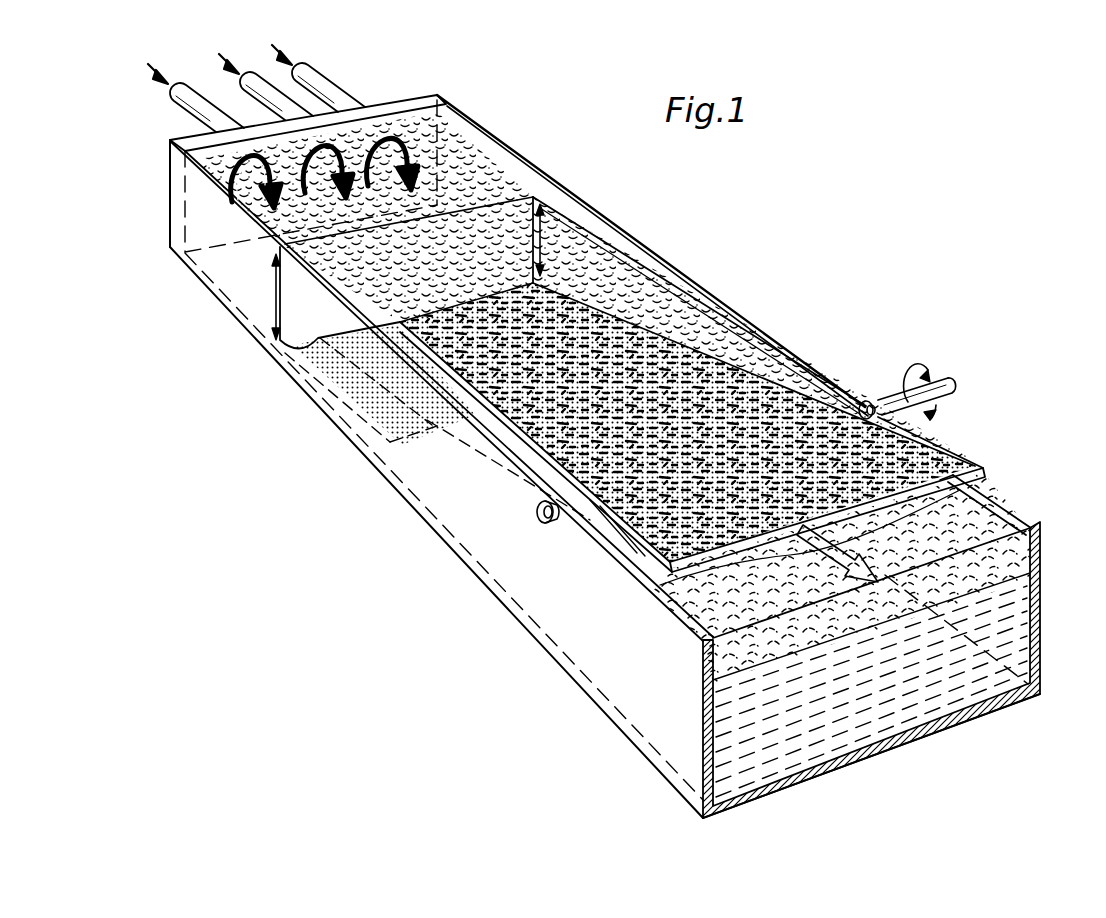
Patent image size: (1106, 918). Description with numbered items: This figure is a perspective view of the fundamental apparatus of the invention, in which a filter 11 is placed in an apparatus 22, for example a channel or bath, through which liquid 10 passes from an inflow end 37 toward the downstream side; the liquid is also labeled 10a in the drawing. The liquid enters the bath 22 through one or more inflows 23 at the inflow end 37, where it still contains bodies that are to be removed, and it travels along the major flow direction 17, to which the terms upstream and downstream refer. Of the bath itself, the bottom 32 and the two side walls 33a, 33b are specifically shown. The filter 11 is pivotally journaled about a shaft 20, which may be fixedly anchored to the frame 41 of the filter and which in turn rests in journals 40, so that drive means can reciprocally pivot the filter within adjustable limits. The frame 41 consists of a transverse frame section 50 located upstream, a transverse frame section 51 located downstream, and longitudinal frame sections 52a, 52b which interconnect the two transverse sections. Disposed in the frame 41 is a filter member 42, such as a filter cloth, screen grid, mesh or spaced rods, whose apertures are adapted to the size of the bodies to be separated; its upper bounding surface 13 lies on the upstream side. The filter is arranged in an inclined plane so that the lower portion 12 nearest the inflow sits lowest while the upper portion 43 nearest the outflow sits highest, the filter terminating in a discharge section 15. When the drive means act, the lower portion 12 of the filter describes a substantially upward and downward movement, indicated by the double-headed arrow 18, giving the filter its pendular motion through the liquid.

The liquid 10 is at (457, 158).
The tank 10a is at (1030, 526).
The filter 11 is at (440, 437).
The lower portion of the filter 12 is at (353, 395).
The upper bounding surface 13 is at (407, 390).
The discharge section 15 is at (953, 455).
The flow direction 17 is at (235, 197).
The double-headed arrow 18 is at (547, 227).
The shaft 20 is at (945, 392).
The bath 22 is at (708, 280).
The inflows 23 is at (325, 100).
The bottom 32 is at (893, 745).
The side wall 33a is at (997, 523).
The side wall 33b is at (562, 622).
The inflow end 37 is at (420, 98).
The journals 40 is at (876, 410).
The frame 41 is at (800, 392).
The filter member 42 is at (427, 413).
The upper portion of the filter 43 is at (635, 540).
The transverse frame section 50 is at (280, 362).
The transverse frame section 51 is at (989, 525).
The longitudinal frame section 52a is at (768, 385).
The longitudinal frame section 52b is at (604, 522).